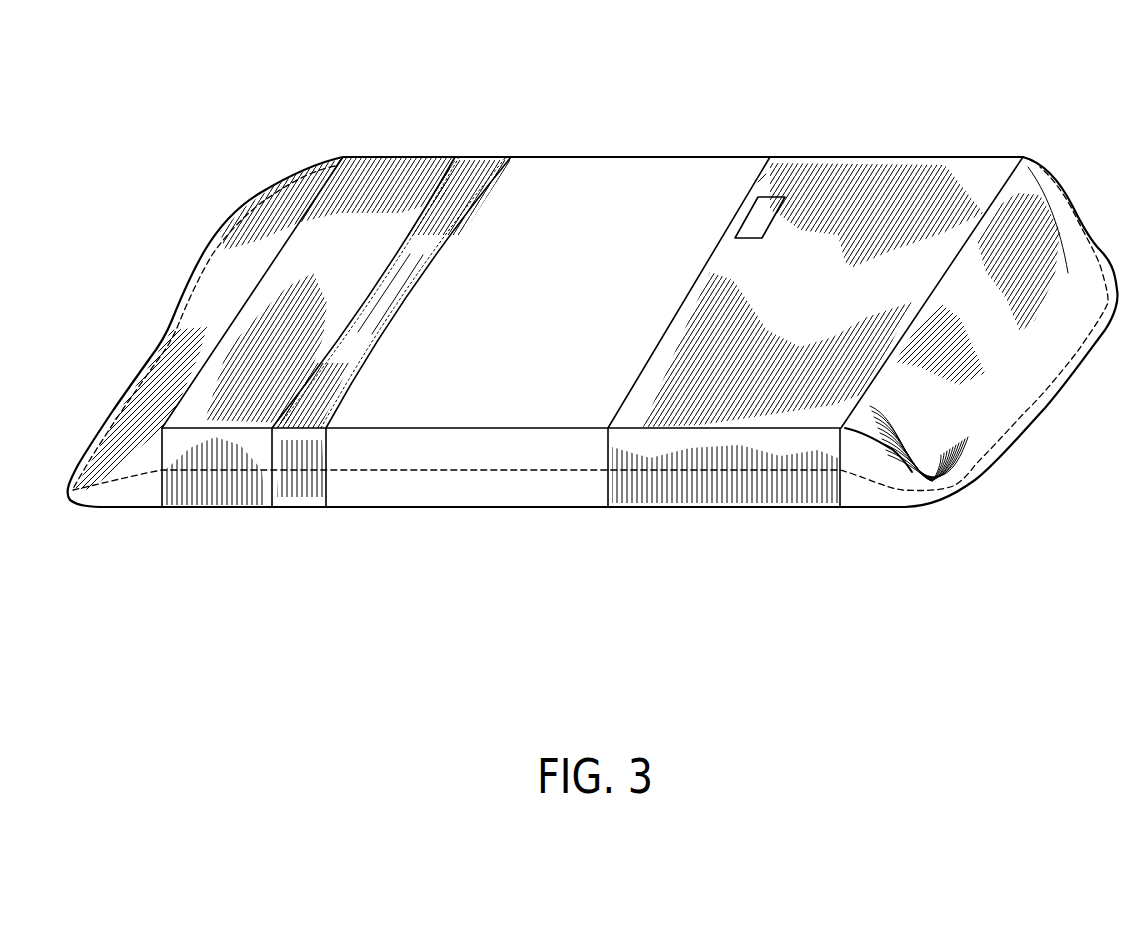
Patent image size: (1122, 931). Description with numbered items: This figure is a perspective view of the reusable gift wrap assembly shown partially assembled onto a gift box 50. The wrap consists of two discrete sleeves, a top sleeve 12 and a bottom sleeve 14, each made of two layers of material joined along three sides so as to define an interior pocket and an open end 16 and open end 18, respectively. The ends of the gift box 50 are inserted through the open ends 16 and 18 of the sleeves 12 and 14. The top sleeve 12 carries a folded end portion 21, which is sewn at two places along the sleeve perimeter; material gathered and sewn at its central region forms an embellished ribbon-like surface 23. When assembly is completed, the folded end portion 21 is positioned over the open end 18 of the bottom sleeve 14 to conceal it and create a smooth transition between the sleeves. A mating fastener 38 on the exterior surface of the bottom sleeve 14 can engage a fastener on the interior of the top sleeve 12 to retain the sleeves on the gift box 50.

The top sleeve 12 is at (343, 243).
The bottom sleeve 14 is at (815, 285).
The open end 16 is at (510, 173).
The open end 18 is at (758, 182).
The folded end portion 21 is at (323, 402).
The ribbon-like surface 23 is at (383, 295).
The fastener 38 is at (782, 195).
The gift box 50 is at (560, 368).